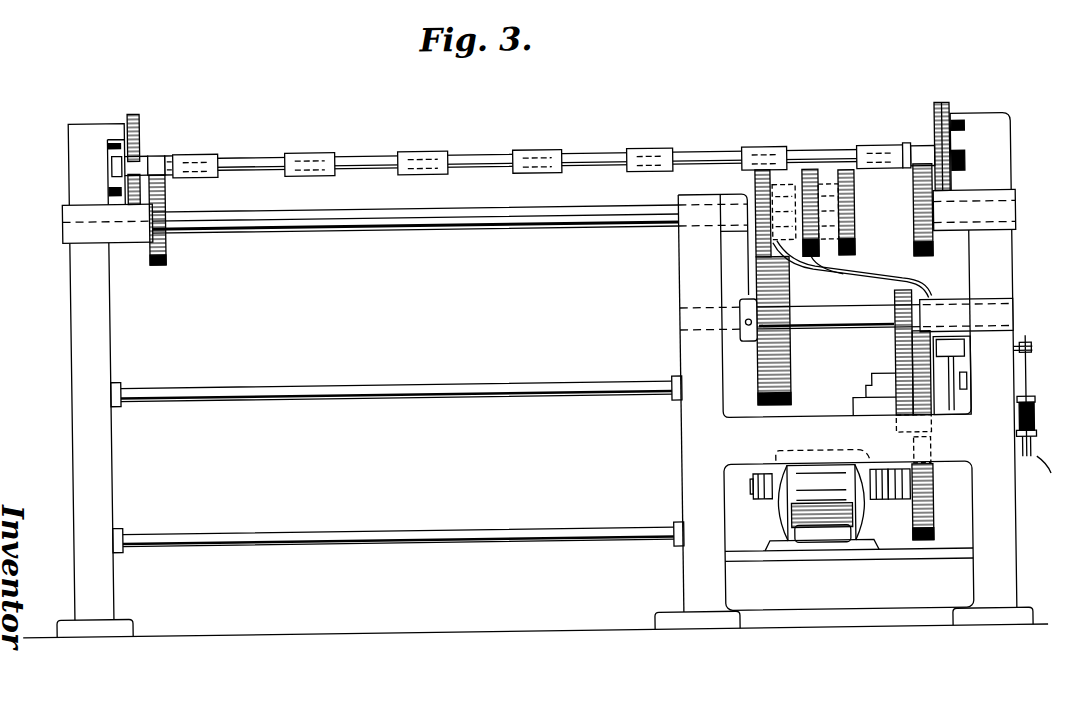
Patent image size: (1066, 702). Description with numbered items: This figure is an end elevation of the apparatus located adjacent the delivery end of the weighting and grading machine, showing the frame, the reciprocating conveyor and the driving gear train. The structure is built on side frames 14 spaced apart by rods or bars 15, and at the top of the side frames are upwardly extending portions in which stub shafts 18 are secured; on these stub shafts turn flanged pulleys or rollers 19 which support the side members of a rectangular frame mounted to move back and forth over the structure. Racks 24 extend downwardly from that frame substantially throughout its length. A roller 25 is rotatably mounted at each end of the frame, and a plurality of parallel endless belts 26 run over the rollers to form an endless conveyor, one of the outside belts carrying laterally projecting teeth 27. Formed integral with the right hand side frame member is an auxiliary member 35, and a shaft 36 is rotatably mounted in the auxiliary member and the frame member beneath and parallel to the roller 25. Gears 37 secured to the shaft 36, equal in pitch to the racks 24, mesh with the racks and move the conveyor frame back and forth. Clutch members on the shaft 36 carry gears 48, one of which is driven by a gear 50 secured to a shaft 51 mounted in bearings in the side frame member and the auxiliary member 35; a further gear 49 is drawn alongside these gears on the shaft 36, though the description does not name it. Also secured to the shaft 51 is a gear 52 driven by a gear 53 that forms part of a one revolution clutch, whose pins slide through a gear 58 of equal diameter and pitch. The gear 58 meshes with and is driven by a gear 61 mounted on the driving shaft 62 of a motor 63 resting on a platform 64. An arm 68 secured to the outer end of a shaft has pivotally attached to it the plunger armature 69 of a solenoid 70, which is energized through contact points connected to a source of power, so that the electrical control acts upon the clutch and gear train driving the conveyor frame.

The side frames 14 is at (76, 362).
The rods or bars 15 is at (327, 385).
The stub shafts 18 is at (951, 109).
The flanged pulleys or rollers 19 is at (135, 189).
The racks 24 is at (155, 170).
The roller 25 is at (372, 154).
The endless belts 26 is at (211, 152).
The laterally projecting teeth 27 is at (171, 153).
The auxiliary member 35 is at (687, 285).
The shaft 36 is at (449, 229).
The gears 37 is at (168, 255).
The gears 48 is at (755, 181).
The gear 49 is at (846, 172).
The gear 50 is at (759, 378).
The shaft 51 is at (805, 333).
The gear 52 is at (892, 294).
The gear 53 is at (894, 371).
The gear 58 is at (934, 424).
The gear 61 is at (930, 516).
The driving shaft 62 is at (755, 493).
The motor 63 is at (811, 520).
The platform 64 is at (889, 565).
The arm 68 is at (1032, 340).
The plunger armature 69 is at (1023, 386).
The solenoid 70 is at (1050, 480).